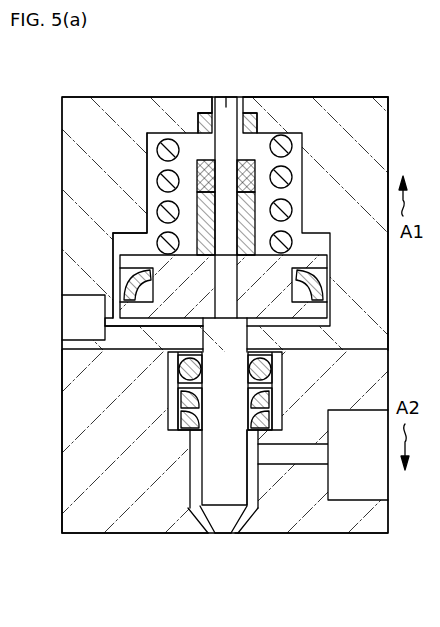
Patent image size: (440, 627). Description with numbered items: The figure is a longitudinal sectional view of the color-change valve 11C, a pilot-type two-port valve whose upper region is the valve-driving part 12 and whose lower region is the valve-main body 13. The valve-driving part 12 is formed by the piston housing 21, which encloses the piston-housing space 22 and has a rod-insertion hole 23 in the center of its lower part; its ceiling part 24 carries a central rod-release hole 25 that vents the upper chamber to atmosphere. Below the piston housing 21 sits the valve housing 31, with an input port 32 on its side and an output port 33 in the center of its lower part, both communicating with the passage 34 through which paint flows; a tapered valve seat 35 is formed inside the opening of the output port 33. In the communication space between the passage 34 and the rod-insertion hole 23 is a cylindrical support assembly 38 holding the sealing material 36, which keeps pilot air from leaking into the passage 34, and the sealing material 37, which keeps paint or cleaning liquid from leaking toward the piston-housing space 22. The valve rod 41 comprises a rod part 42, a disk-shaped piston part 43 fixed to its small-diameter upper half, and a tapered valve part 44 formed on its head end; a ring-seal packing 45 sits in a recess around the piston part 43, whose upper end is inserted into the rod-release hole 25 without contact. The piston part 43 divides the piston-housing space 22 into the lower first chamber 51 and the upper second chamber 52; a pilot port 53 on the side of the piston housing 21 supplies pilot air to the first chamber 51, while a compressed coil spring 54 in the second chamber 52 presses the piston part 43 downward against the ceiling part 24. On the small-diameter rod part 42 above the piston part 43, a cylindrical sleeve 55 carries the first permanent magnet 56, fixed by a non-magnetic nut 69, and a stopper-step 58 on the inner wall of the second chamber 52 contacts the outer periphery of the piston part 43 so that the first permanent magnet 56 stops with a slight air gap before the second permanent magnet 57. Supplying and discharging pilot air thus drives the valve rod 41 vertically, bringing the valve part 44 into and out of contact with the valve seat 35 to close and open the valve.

The color-change valve 11C is at (326, 97).
The valve-driving part 12 is at (62, 146).
The valve-main body 13 is at (22, 512).
The piston housing 21 is at (381, 140).
The piston-housing space 22 is at (148, 168).
The rod-insertion hole 23 is at (232, 350).
The ceiling part 24 is at (276, 97).
The rod-release hole 25 is at (211, 163).
The valve housing 31 is at (77, 430).
The input port 32 is at (352, 499).
The output port 33 is at (231, 535).
The passage 34 is at (233, 478).
The valve seat 35 is at (201, 529).
The sealing material 36 is at (178, 368).
The sealing material 37 is at (180, 401).
The support assembly 38 is at (283, 370).
The valve rod 41 is at (237, 95).
The rod part 42 is at (210, 455).
The piston part 43 is at (177, 300).
The valve part 44 is at (218, 530).
The ring-seal packing 45 is at (327, 289).
The first chamber 51 is at (138, 325).
The second chamber 52 is at (148, 215).
The pilot port 53 is at (98, 298).
The coil spring 54 is at (252, 178).
The sleeve 55 is at (255, 233).
The first permanent magnet 56 is at (199, 176).
The second permanent magnet 57 is at (197, 116).
The stopper-step 58 is at (113, 250).
The nut 69 is at (216, 115).